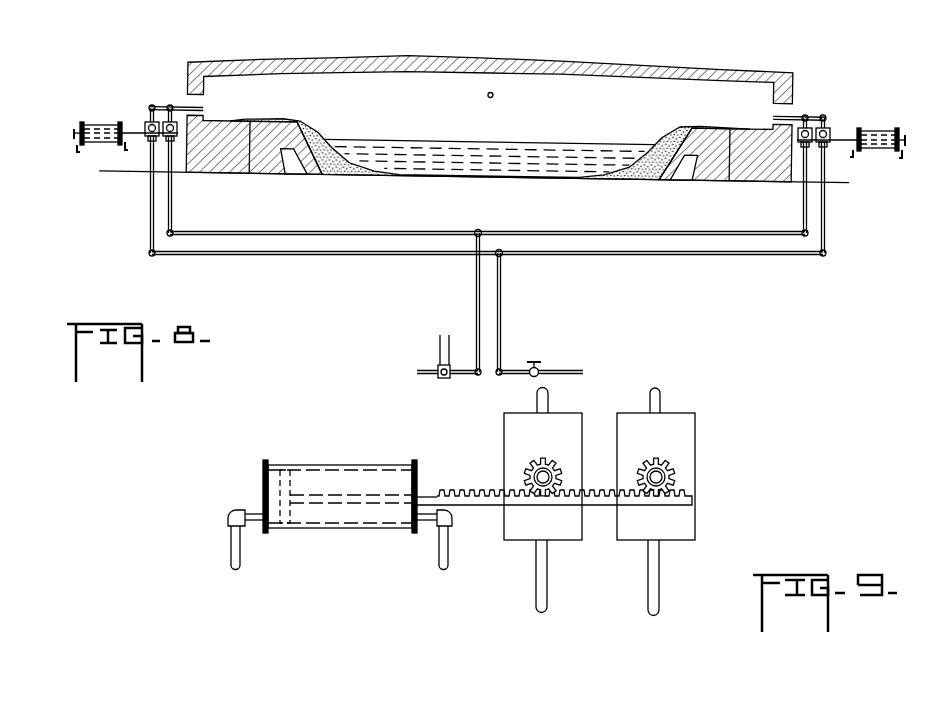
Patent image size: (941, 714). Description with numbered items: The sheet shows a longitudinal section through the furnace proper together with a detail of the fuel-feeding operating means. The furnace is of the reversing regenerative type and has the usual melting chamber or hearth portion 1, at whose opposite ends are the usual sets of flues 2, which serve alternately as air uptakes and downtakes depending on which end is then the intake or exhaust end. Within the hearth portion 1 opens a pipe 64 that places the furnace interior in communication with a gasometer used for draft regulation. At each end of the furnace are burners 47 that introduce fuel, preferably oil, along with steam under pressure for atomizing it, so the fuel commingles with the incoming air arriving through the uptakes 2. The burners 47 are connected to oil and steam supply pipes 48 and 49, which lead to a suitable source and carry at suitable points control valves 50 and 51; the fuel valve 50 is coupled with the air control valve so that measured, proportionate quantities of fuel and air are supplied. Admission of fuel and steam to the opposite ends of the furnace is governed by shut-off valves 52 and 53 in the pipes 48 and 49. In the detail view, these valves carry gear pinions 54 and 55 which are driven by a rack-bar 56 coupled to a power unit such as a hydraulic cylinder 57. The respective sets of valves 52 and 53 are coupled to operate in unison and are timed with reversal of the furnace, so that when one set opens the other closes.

In FIG. 8, the melting chamber or hearth portion 1 is at (490, 83).
In FIG. 8, the flues 2 is at (227, 163).
In FIG. 8, the burners 47 is at (206, 110).
In FIG. 8, the oil supply pipe 48 is at (173, 206).
In FIG. 9, the oil supply pipe 48 is at (660, 563).
In FIG. 8, the steam supply pipe 49 is at (148, 208).
In FIG. 9, the steam supply pipe 49 is at (539, 556).
In FIG. 8, the fuel control valve 50 is at (438, 377).
In FIG. 8, the control valve 51 is at (538, 366).
In FIG. 8, the shut-off valve 52 is at (483, 144).
In FIG. 9, the shut-off valve 52 is at (688, 460).
In FIG. 8, the shut-off valve 53 is at (147, 139).
In FIG. 9, the shut-off valve 53 is at (517, 432).
In FIG. 9, the gear pinion 54 is at (665, 462).
In FIG. 9, the gear pinion 55 is at (552, 462).
In FIG. 9, the rack-bar 56 is at (478, 500).
In FIG. 9, the hydraulic cylinder 57 is at (380, 528).
In FIG. 8, the pipe 64 is at (492, 92).